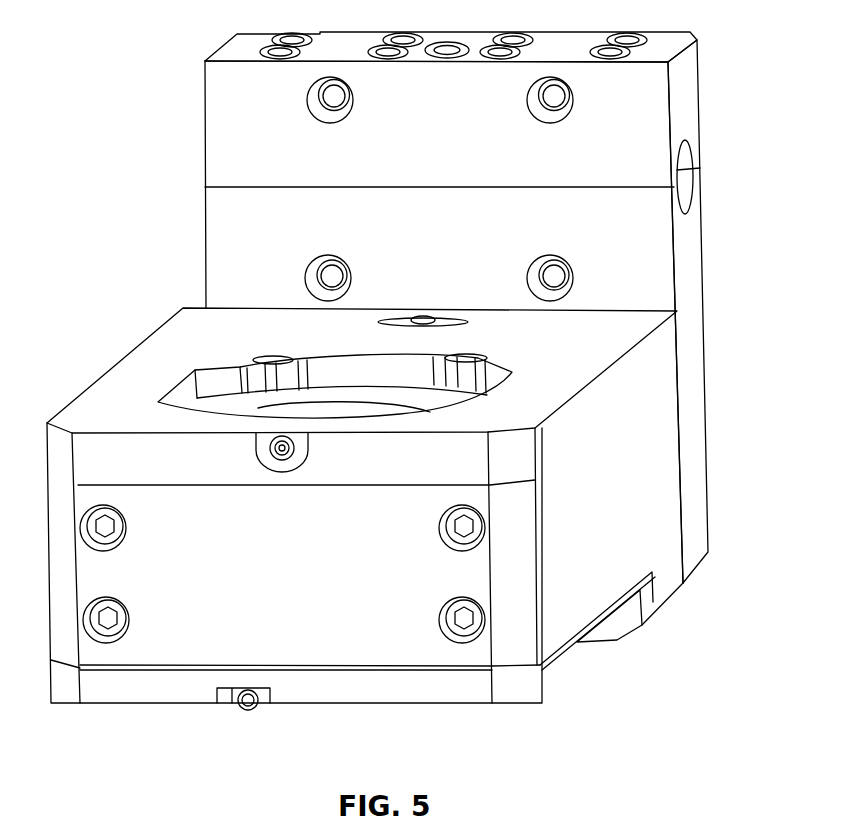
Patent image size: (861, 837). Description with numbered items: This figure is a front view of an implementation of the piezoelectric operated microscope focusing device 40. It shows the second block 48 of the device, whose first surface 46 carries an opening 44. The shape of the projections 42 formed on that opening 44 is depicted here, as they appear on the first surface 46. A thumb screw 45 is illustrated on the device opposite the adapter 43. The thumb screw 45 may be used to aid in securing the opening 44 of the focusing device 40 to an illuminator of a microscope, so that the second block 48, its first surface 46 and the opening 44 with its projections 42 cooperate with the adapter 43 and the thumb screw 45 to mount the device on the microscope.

The focusing device 40 is at (146, 150).
The projections 42 is at (508, 368).
The adapter 43 is at (337, 366).
The opening 44 is at (181, 387).
The thumb screw 45 is at (297, 453).
The first surface 46 is at (641, 320).
The second block 48 is at (660, 530).